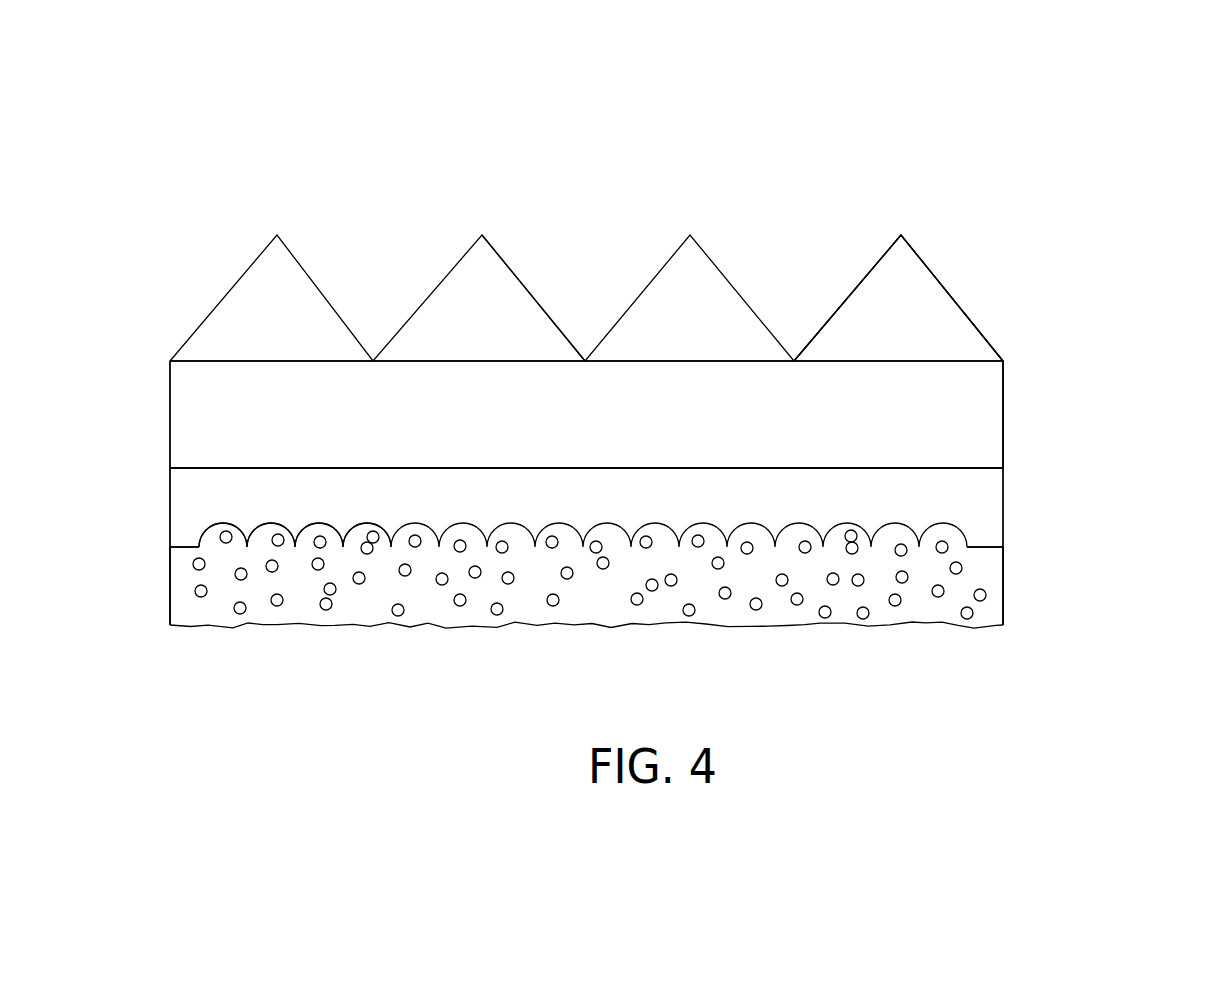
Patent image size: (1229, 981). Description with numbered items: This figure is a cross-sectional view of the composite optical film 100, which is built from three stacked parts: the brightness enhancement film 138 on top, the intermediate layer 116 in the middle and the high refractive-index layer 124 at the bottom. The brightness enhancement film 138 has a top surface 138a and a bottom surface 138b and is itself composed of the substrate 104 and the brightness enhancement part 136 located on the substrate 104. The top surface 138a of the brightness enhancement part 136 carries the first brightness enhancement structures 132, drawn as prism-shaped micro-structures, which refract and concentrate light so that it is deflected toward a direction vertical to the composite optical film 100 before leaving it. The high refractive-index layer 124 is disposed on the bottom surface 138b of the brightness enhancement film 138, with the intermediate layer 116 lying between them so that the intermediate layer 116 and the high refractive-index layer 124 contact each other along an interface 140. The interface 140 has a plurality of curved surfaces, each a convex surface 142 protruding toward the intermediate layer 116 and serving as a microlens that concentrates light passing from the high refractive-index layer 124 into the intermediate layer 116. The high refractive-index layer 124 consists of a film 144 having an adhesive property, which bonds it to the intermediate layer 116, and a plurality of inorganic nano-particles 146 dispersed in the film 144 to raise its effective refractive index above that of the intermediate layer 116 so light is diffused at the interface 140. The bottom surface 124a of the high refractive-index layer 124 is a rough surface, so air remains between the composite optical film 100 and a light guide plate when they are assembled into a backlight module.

The composite optical film 100 is at (1037, 121).
The first brightness enhancement structures 132 is at (340, 260).
The top surface 138a is at (502, 257).
The brightness enhancement part 136 is at (930, 318).
The substrate 104 is at (975, 422).
The brightness enhancement film 138 is at (1128, 293).
The bottom surface 138b is at (968, 467).
The intermediate layer 116 is at (993, 513).
The interface 140 is at (963, 532).
The convex surface 142 is at (347, 509).
The film 144 is at (997, 578).
The inorganic nano-particles 146 is at (973, 613).
The high refractive-index layer 124 is at (1120, 575).
The bottom surface 124a is at (895, 627).